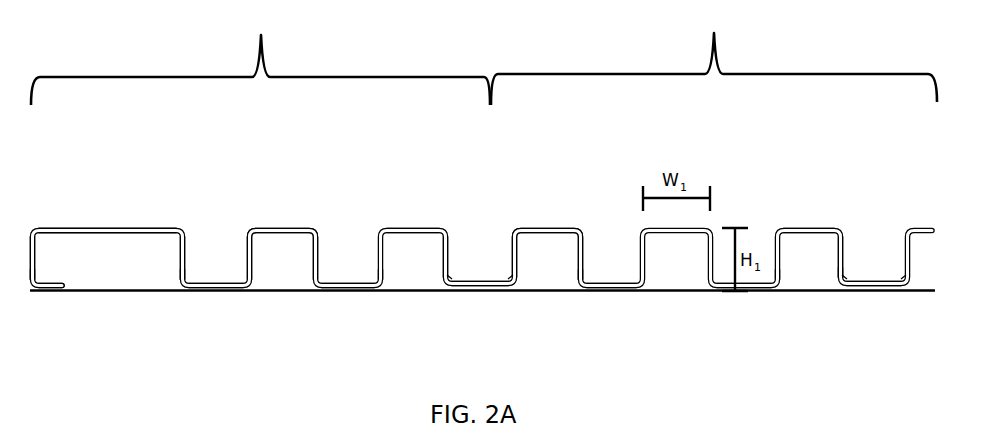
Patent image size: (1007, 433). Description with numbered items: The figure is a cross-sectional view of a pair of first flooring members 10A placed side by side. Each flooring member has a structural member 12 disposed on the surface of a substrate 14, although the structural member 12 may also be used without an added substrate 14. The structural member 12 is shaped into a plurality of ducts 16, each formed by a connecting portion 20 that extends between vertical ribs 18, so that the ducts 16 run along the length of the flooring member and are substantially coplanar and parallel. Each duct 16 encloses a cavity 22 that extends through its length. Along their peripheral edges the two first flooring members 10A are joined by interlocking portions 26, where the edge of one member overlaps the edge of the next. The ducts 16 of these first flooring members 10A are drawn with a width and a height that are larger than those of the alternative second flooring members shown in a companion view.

The first flooring member 10A is at (484, 55).
The structural member 12 is at (97, 182).
The substrate 14 is at (289, 293).
The duct 16 is at (181, 226).
The vertical rib 18 is at (37, 262).
The connecting portion 20 is at (143, 229).
The cavity 22 is at (285, 262).
The interlocking portion 26 is at (472, 283).